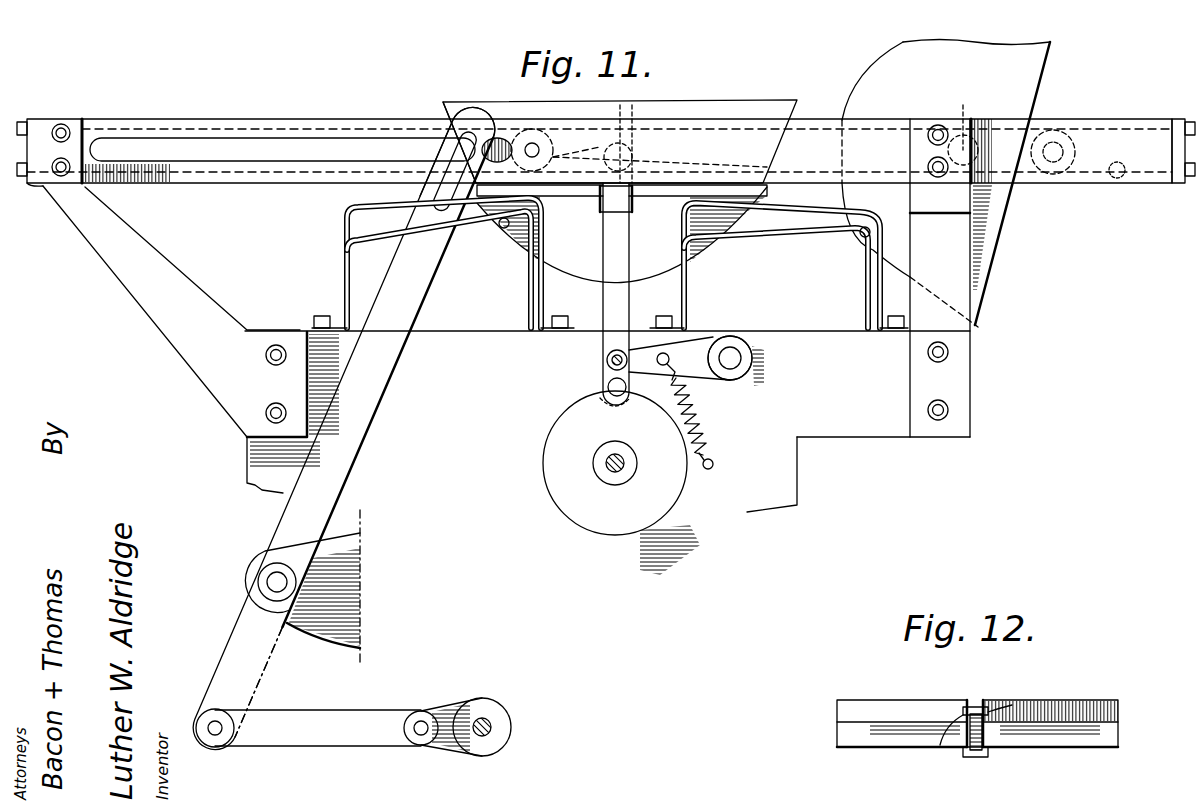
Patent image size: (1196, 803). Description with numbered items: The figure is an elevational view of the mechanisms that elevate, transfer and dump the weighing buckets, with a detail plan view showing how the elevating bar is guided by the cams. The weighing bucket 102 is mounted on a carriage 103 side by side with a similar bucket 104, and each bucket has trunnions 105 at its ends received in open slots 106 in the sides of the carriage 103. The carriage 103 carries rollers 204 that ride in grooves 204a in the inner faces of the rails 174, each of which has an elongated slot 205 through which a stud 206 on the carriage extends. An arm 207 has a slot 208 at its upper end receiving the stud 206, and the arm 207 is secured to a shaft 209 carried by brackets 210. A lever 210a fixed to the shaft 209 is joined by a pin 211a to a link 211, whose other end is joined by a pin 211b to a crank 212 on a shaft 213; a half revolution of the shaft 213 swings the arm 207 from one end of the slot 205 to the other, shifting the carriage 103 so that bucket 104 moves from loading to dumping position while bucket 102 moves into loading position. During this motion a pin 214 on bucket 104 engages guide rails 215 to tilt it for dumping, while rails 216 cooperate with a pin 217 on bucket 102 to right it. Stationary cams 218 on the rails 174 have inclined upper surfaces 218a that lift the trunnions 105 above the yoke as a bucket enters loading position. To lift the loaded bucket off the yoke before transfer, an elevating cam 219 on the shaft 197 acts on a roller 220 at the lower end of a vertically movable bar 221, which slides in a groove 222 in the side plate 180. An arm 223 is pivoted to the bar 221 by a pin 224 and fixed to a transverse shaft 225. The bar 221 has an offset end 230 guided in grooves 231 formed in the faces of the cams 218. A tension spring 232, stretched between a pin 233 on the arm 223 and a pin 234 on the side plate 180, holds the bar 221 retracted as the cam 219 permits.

In FIG. 11, the weighing bucket 102 is at (995, 262).
In FIG. 11, the carriage 103 is at (437, 120).
In FIG. 11, the weighing bucket 104 is at (740, 100).
In FIG. 11, the trunnions 105 is at (632, 150).
In FIG. 11, the open slots 106 is at (626, 110).
In FIG. 11, the rails 174 is at (268, 118).
In FIG. 11, the side plate 180 is at (477, 331).
In FIG. 11, the baffle plate operating shaft 197 is at (615, 472).
In FIG. 11, the rollers 204 is at (553, 147).
In FIG. 11, the grooves 204a is at (1118, 178).
In FIG. 11, the elongated slot 205 is at (141, 143).
In FIG. 11, the studs 206 is at (440, 153).
In FIG. 11, the arm 207 is at (357, 440).
In FIG. 11, the slot 208 is at (433, 196).
In FIG. 11, the shaft 209 is at (272, 582).
In FIG. 11, the brackets 210 is at (337, 645).
In FIG. 11, the lever 210a is at (250, 634).
In FIG. 11, the link 211 is at (304, 740).
In FIG. 11, the pin 211a is at (215, 736).
In FIG. 11, the pin 211b is at (421, 736).
In FIG. 11, the crank 212 is at (450, 706).
In FIG. 11, the shaft 213 is at (495, 726).
In FIG. 11, the pin 214 is at (502, 229).
In FIG. 11, the guide rails 215 is at (350, 224).
In FIG. 11, the rails 216 is at (880, 268).
In FIG. 11, the pin 217 is at (860, 236).
In FIG. 11, the stationary cams 218 is at (584, 200).
In FIG. 12, the stationary cams 218 is at (912, 737).
In FIG. 11, the inclined upper surfaces 218a is at (570, 160).
In FIG. 12, the inclined upper surfaces 218a is at (900, 708).
In FIG. 11, the elevating cam 219 is at (662, 512).
In FIG. 11, the roller 220 is at (608, 387).
In FIG. 11, the vertically movable bar 221 is at (603, 298).
In FIG. 12, the vertically movable bar 221 is at (972, 757).
In FIG. 11, the groove 222 is at (603, 351).
In FIG. 11, the arm 223 is at (752, 366).
In FIG. 11, the pin 224 is at (607, 361).
In FIG. 11, the shaft 225 is at (736, 338).
In FIG. 11, the offset ends 230 is at (604, 215).
In FIG. 12, the offset ends 230 is at (976, 706).
In FIG. 11, the grooves 231 is at (600, 212).
In FIG. 12, the grooves 231 is at (991, 713).
In FIG. 11, the tension spring 232 is at (703, 418).
In FIG. 11, the pin 233 is at (670, 352).
In FIG. 11, the pin 234 is at (713, 467).